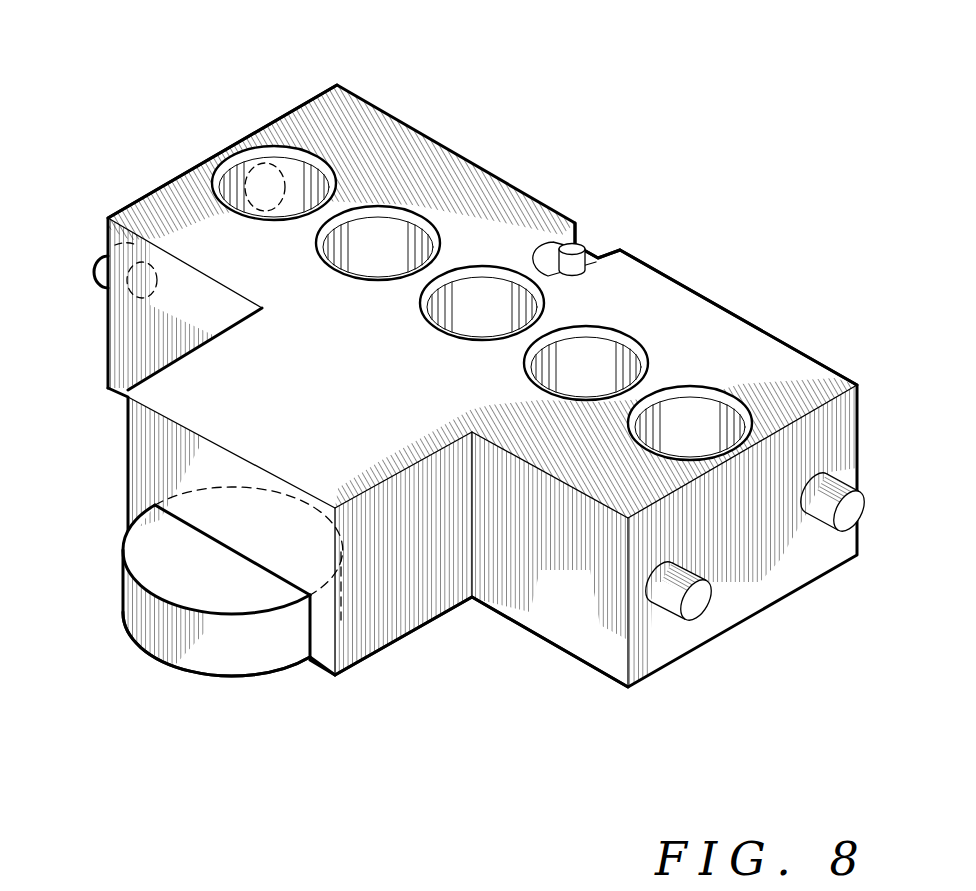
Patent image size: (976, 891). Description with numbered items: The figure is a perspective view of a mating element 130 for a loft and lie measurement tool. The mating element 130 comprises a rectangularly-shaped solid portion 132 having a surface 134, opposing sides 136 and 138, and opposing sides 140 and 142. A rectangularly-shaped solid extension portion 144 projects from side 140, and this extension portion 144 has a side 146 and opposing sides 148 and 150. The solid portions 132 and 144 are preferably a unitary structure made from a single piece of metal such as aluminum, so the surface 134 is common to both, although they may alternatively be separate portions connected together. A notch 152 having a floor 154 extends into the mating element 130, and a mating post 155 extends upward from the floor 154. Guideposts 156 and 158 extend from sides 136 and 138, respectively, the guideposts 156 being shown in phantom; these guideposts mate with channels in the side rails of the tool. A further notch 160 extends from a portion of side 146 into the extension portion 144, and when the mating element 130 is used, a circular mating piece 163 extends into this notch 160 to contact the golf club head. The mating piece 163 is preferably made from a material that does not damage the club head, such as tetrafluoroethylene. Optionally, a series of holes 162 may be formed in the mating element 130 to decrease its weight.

The mating element 130 is at (804, 785).
The rectangularly-shaped solid portion 132 is at (262, 110).
The surface 134 is at (733, 337).
The side 136 is at (150, 195).
The side 138 is at (755, 587).
The side 140 is at (605, 650).
The side 142 is at (835, 373).
The rectangularly-shaped solid extension portion 144 is at (452, 639).
The side 146 is at (150, 444).
The side 148 is at (122, 346).
The side 150 is at (380, 620).
The notch 152 is at (654, 221).
The floor 154 is at (597, 260).
The mating post 155 is at (575, 246).
The guideposts 156 is at (262, 152).
The guideposts 158 is at (852, 518).
The notch 160 is at (310, 630).
The holes 162 is at (238, 178).
The circular mating piece 163 is at (137, 630).